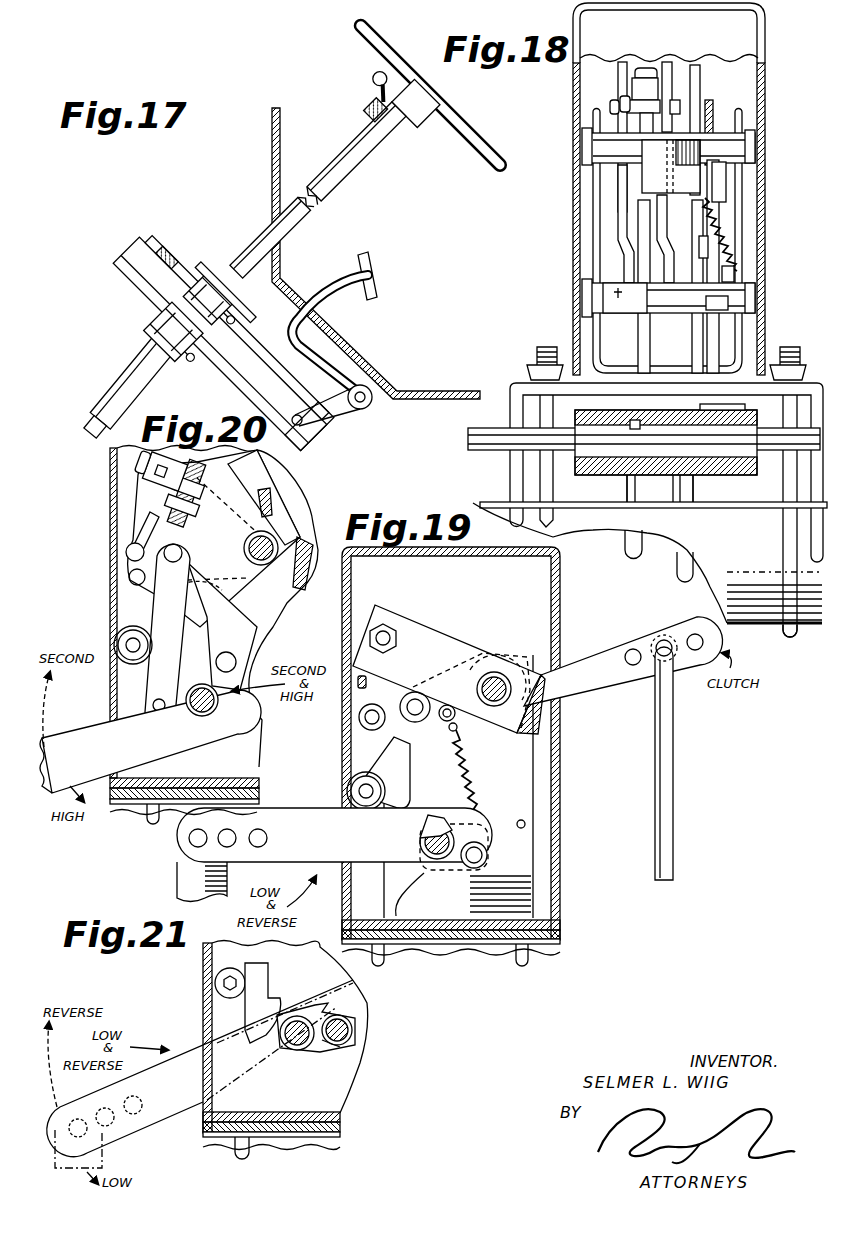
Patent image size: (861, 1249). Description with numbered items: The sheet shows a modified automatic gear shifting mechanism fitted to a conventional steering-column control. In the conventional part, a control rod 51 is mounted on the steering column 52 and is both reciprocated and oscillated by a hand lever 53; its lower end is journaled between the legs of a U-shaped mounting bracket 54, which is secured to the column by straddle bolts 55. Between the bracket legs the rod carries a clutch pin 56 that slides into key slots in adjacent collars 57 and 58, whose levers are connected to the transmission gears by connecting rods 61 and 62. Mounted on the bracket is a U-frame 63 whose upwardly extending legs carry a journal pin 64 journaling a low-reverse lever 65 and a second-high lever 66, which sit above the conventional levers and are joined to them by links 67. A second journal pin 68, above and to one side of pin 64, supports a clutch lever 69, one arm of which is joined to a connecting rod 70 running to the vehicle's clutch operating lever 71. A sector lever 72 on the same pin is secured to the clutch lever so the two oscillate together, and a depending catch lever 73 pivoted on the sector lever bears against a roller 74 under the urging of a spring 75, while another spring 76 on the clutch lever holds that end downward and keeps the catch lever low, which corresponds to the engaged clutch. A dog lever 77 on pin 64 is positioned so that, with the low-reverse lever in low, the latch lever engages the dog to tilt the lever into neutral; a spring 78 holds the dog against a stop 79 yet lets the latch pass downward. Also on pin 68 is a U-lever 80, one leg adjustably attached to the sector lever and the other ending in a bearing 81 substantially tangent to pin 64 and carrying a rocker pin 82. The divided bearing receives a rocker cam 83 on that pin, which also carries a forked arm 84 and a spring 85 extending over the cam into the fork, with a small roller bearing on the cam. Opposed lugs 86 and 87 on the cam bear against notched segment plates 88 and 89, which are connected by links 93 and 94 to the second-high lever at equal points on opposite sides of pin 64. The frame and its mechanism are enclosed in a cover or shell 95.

In FIG. 18, the control rod 51 is at (486, 452).
In FIG. 17, the steering column 52 is at (366, 162).
In FIG. 18, the steering column 52 is at (748, 618).
In FIG. 17, the hand lever 53 is at (372, 80).
In FIG. 17, the U-shaped mounting bracket 54 is at (205, 282).
In FIG. 18, the U-shaped mounting bracket 54 is at (520, 390).
In FIG. 17, the straddle bolts 55 is at (233, 321).
In FIG. 18, the straddle bolts 55 is at (790, 640).
In FIG. 19, the straddle bolts 55 is at (380, 962).
In FIG. 20, the straddle bolts 55 is at (153, 820).
In FIG. 21, the straddle bolts 55 is at (238, 1156).
In FIG. 18, the clutch pin 56 is at (634, 422).
In FIG. 17, the collar 57 is at (222, 295).
In FIG. 18, the collar 57 is at (726, 404).
In FIG. 17, the collar 58 is at (170, 307).
In FIG. 18, the collar 58 is at (680, 490).
In FIG. 18, the connecting rod 61 is at (692, 490).
In FIG. 17, the connecting rod 62 is at (327, 433).
In FIG. 18, the connecting rod 62 is at (628, 490).
In FIG. 18, the U-frame 63 is at (596, 328).
In FIG. 19, the U-frame 63 is at (520, 860).
In FIG. 20, the U-frame 63 is at (256, 742).
In FIG. 21, the U-frame 63 is at (332, 1096).
In FIG. 18, the journal pin 64 is at (586, 298).
In FIG. 19, the journal pin 64 is at (434, 860).
In FIG. 20, the journal pin 64 is at (204, 716).
In FIG. 21, the journal pin 64 is at (290, 1045).
In FIG. 18, the low-reverse lever 65 is at (694, 325).
In FIG. 19, the low-reverse lever 65 is at (332, 812).
In FIG. 21, the low-reverse lever 65 is at (152, 1128).
In FIG. 18, the second-high lever 66 is at (644, 325).
In FIG. 20, the second-high lever 66 is at (100, 712).
In FIG. 19, the links 67 is at (177, 884).
In FIG. 18, the second journal pin 68 is at (755, 146).
In FIG. 19, the second journal pin 68 is at (497, 673).
In FIG. 20, the second journal pin 68 is at (262, 533).
In FIG. 17, the clutch lever 69 is at (175, 250).
In FIG. 18, the clutch lever 69 is at (712, 102).
In FIG. 19, the clutch lever 69 is at (642, 636).
In FIG. 17, the connecting rod 70 is at (242, 360).
In FIG. 19, the connecting rod 70 is at (674, 738).
In FIG. 17, the clutch operating lever 71 is at (348, 410).
In FIG. 18, the sector lever 72 is at (698, 70).
In FIG. 19, the sector lever 72 is at (430, 628).
In FIG. 20, the sector lever 72 is at (128, 570).
In FIG. 18, the catch lever 73 is at (716, 343).
In FIG. 19, the catch lever 73 is at (394, 797).
In FIG. 20, the catch lever 73 is at (125, 612).
In FIG. 21, the catch lever 73 is at (268, 980).
In FIG. 18, the roller 74 is at (706, 246).
In FIG. 19, the roller 74 is at (350, 784).
In FIG. 20, the roller 74 is at (119, 634).
In FIG. 21, the roller 74 is at (215, 983).
In FIG. 18, the spring 75 is at (730, 190).
In FIG. 19, the spring 75 is at (405, 748).
In FIG. 18, the spring 76 is at (725, 232).
In FIG. 19, the spring 76 is at (472, 772).
In FIG. 19, the dog lever 77 is at (432, 822).
In FIG. 21, the dog lever 77 is at (340, 1003).
In FIG. 18, the spring 78 is at (734, 276).
In FIG. 19, the spring 78 is at (452, 868).
In FIG. 21, the spring 78 is at (328, 1050).
In FIG. 18, the stop 79 is at (728, 303).
In FIG. 19, the stop 79 is at (476, 868).
In FIG. 21, the stop 79 is at (352, 1036).
In FIG. 18, the U-lever 80 is at (688, 150).
In FIG. 19, the U-lever 80 is at (528, 732).
In FIG. 20, the U-lever 80 is at (312, 545).
In FIG. 18, the bearing 81 is at (630, 93).
In FIG. 20, the bearing 81 is at (128, 466).
In FIG. 18, the rocker pin 82 is at (644, 68).
In FIG. 20, the rocker pin 82 is at (193, 470).
In FIG. 18, the rocker cam 83 is at (671, 166).
In FIG. 20, the rocker cam 83 is at (178, 496).
In FIG. 20, the forked arm 84 is at (145, 482).
In FIG. 20, the spring 85 is at (145, 530).
In FIG. 18, the lug 86 is at (610, 108).
In FIG. 18, the lug 87 is at (680, 106).
In FIG. 18, the segment plate 88 is at (622, 62).
In FIG. 20, the segment plate 88 is at (292, 600).
In FIG. 18, the segment plate 89 is at (668, 66).
In FIG. 20, the segment plate 89 is at (240, 462).
In FIG. 18, the link 93 is at (620, 181).
In FIG. 20, the link 93 is at (185, 631).
In FIG. 18, the link 94 is at (662, 230).
In FIG. 20, the link 94 is at (250, 645).
In FIG. 17, the cover or shell 95 is at (126, 252).
In FIG. 18, the cover or shell 95 is at (765, 48).
In FIG. 19, the cover or shell 95 is at (560, 598).
In FIG. 20, the cover or shell 95 is at (110, 548).
In FIG. 21, the cover or shell 95 is at (205, 958).